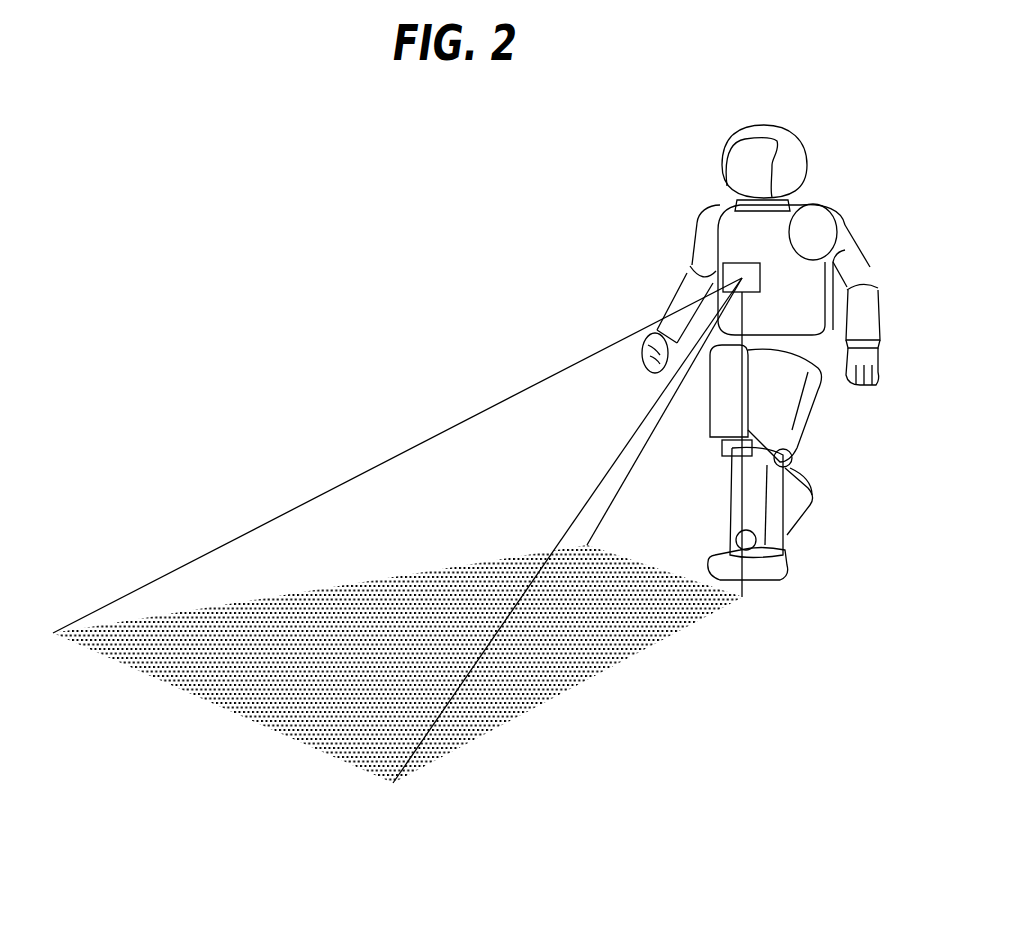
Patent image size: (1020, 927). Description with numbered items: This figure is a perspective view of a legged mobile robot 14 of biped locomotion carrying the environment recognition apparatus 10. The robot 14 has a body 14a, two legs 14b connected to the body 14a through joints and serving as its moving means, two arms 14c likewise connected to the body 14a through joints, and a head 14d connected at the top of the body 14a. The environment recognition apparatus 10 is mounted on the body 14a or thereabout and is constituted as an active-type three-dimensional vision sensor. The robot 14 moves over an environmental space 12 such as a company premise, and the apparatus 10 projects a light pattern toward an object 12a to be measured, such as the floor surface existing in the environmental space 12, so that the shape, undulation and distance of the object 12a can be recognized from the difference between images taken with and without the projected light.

The environment recognition apparatus 10 is at (723, 272).
The environmental space 12 is at (384, 412).
The object 12a is at (456, 563).
The legged mobile robot 14 is at (831, 156).
The body 14a is at (732, 240).
The legs 14b is at (802, 440).
The arms 14c is at (890, 255).
The head 14d is at (757, 126).